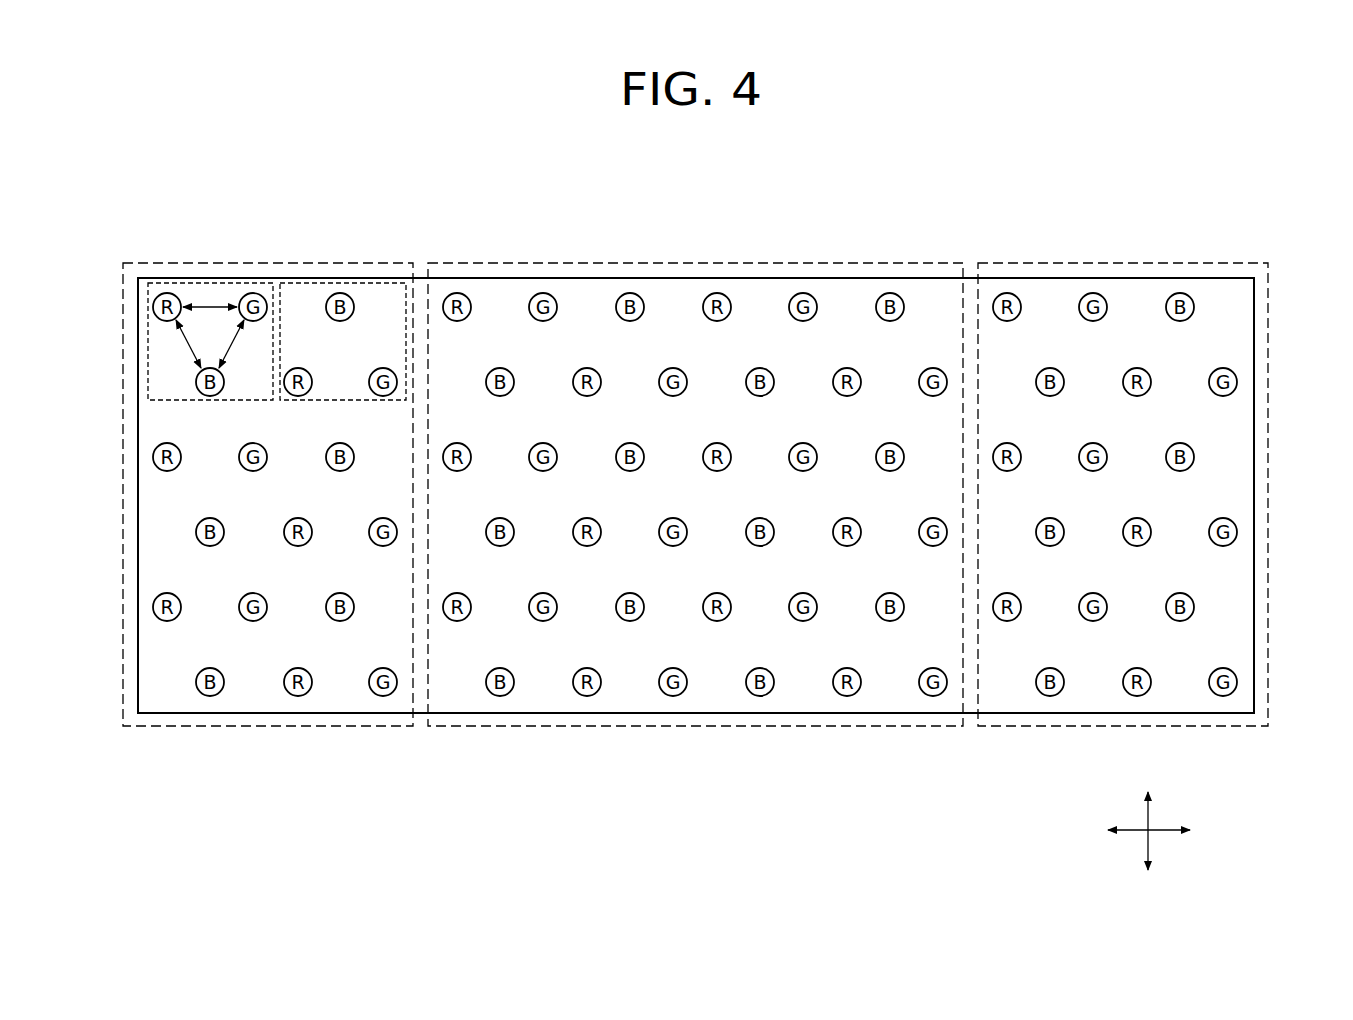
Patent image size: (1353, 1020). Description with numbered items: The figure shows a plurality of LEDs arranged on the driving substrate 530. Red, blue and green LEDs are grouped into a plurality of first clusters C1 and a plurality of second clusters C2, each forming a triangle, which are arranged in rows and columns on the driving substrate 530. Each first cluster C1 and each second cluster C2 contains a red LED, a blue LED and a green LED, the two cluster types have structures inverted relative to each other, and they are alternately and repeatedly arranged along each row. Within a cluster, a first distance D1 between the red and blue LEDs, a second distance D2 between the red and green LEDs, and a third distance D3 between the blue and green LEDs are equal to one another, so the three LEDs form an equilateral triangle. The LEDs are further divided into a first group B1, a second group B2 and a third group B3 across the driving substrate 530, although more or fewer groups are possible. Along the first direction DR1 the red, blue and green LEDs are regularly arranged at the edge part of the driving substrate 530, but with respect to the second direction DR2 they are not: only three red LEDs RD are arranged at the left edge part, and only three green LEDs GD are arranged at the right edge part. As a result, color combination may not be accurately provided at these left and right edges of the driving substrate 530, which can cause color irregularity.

The driving substrate 530 is at (1255, 343).
The first group B1 is at (348, 263).
The second group B2 is at (778, 263).
The third group B3 is at (1205, 263).
The first cluster C1 is at (210, 283).
The second cluster C2 is at (290, 283).
The first distance D1 is at (178, 344).
The second distance D2 is at (210, 294).
The third distance D3 is at (240, 344).
The red LEDs RD is at (152, 307).
The green LEDs GD is at (1237, 383).
The first direction DR1 is at (1174, 830).
The second direction DR2 is at (1148, 817).